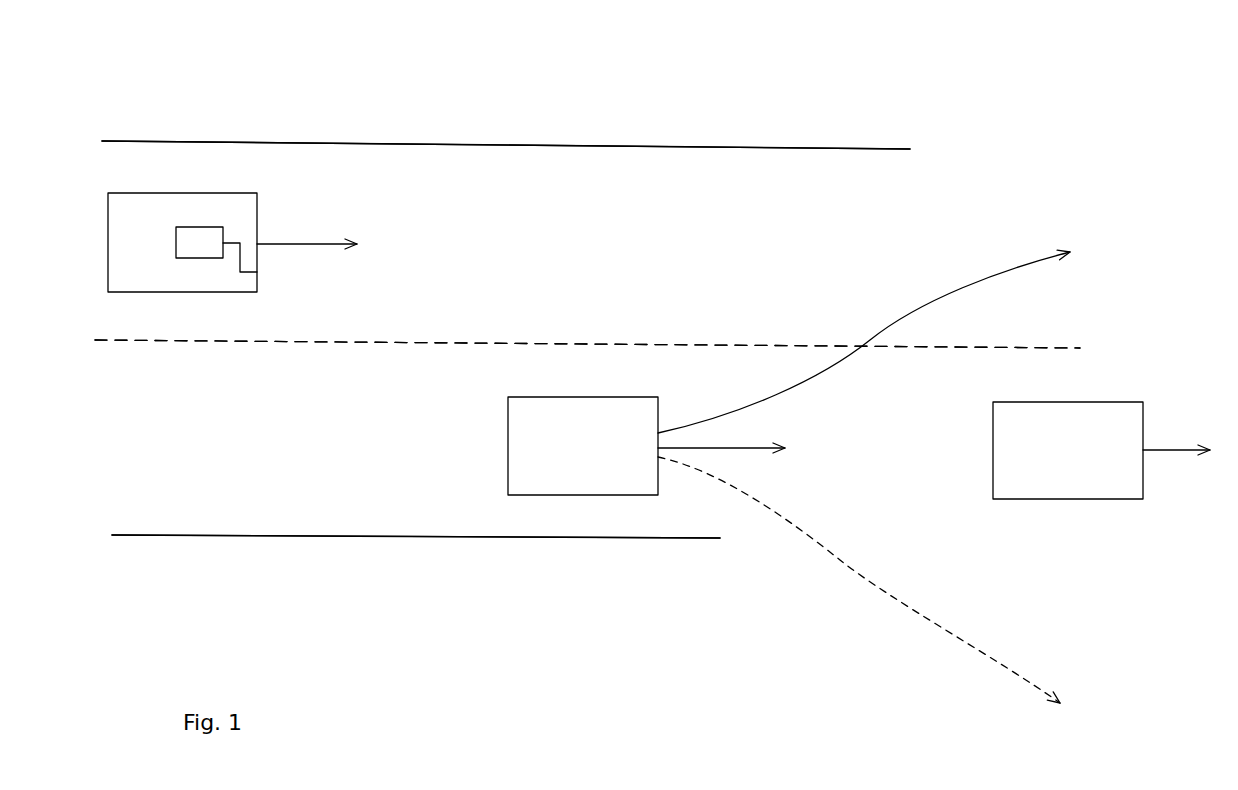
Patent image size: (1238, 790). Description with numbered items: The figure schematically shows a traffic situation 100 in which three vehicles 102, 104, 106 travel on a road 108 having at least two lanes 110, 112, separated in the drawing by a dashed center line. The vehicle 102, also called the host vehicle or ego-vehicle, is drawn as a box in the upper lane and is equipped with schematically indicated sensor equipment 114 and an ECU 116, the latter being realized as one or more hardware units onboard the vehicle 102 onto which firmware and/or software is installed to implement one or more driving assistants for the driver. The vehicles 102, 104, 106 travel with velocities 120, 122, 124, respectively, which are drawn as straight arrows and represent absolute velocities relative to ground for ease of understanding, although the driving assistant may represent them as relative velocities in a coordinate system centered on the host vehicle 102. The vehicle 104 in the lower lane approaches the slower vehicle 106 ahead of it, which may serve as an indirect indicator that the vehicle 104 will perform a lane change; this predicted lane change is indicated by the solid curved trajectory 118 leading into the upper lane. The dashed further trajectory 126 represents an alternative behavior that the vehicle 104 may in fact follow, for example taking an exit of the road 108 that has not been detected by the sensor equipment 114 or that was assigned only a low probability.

The traffic situation 100 is at (778, 72).
The vehicle 102 is at (175, 193).
The vehicle 104 is at (587, 495).
The vehicle 106 is at (1068, 499).
The road 108 is at (1047, 165).
The lane 110 is at (577, 175).
The lane 112 is at (237, 490).
The sensor equipment 114 is at (268, 258).
The ECU 116 is at (200, 258).
The trajectory 118 is at (947, 285).
The velocity 120 is at (295, 244).
The velocity 122 is at (730, 447).
The velocity 124 is at (1162, 450).
The trajectory 126 is at (883, 603).